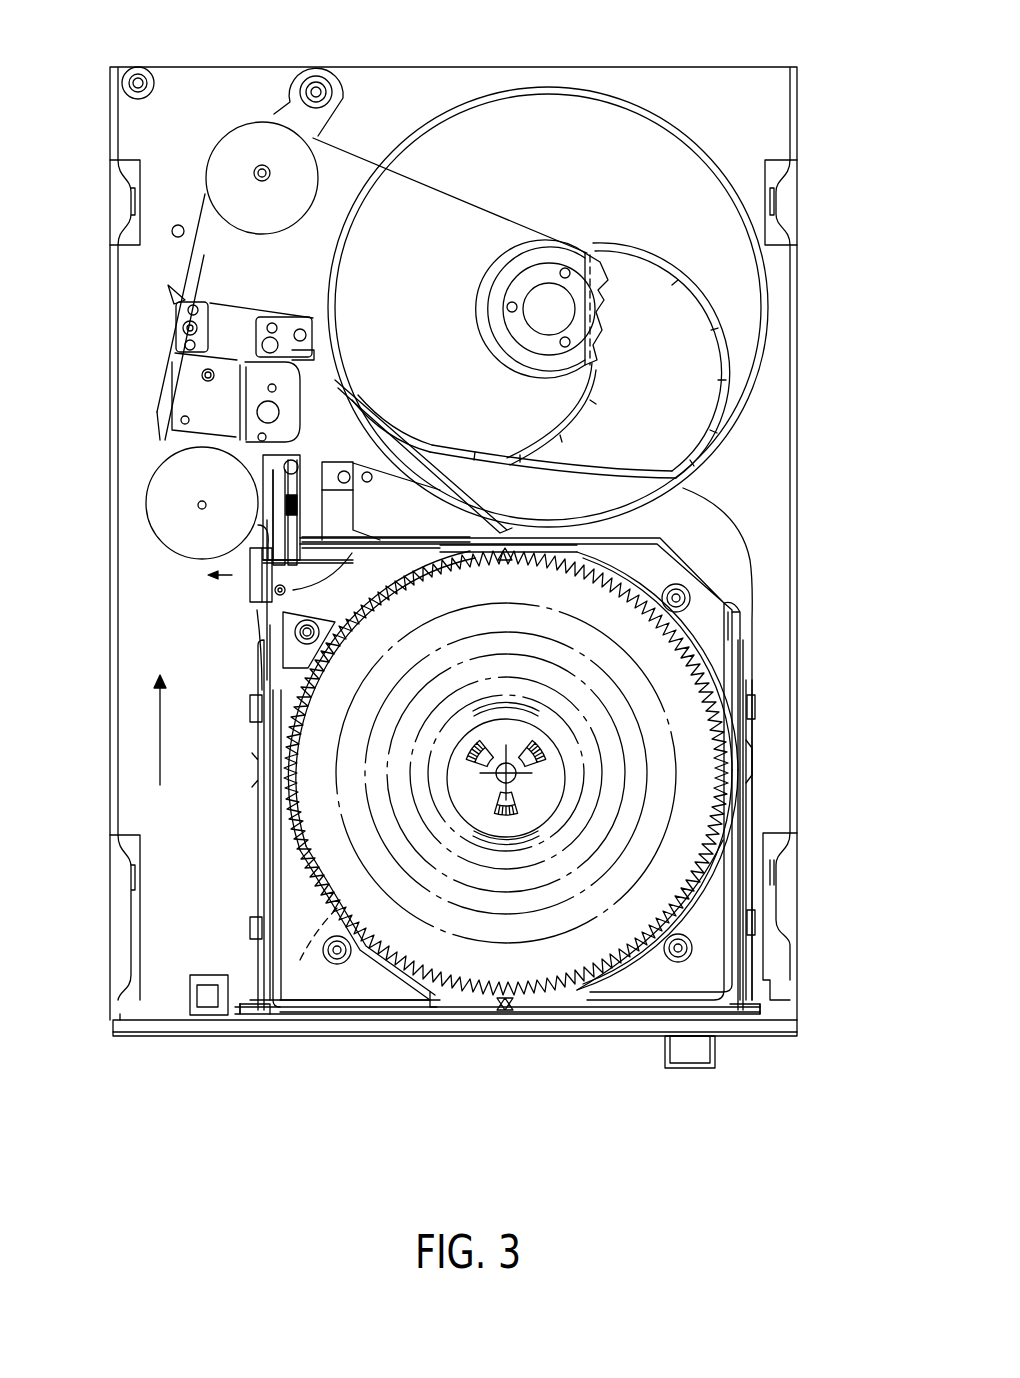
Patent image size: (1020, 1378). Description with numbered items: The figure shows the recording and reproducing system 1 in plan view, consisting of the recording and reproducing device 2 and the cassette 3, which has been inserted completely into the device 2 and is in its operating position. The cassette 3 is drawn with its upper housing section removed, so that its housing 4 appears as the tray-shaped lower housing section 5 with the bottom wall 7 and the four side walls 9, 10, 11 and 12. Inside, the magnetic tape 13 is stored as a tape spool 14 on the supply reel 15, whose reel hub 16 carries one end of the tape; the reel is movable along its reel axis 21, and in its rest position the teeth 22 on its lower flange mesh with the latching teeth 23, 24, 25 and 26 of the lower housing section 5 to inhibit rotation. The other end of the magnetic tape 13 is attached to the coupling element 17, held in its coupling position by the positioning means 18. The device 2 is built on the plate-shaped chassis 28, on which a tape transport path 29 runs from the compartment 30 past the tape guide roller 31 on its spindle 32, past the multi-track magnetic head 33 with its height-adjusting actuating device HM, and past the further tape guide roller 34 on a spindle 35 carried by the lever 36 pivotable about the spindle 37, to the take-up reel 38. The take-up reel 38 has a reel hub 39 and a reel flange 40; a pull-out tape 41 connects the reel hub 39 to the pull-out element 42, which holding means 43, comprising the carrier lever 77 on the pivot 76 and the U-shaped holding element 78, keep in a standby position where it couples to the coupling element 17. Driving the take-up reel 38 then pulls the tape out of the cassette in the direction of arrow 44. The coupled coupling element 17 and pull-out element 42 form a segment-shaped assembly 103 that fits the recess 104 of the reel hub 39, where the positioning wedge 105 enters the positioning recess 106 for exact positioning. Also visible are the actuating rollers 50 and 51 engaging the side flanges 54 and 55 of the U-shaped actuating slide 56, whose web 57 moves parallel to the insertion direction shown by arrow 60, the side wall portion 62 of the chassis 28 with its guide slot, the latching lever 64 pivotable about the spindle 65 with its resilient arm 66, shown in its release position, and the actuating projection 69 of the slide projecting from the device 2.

The recording and reproducing system 1 is at (178, 1158).
The recording and reproducing device 2 is at (155, 1052).
The cassette 3 is at (750, 535).
The housing 4 is at (668, 520).
The lower housing section 5 is at (272, 1018).
The bottom wall 7 is at (390, 1001).
The side wall 9 is at (738, 640).
The side wall 10 is at (594, 538).
The side wall 11 is at (270, 858).
The side wall 12 is at (607, 1010).
The magnetic tape 13 is at (425, 570).
The tape spool 14 is at (320, 940).
The supply reel 15 is at (620, 962).
The reel hub 16 is at (555, 798).
The coupling element 17 is at (300, 583).
The positioning means 18 is at (378, 592).
The reel axis 21 is at (498, 778).
The teeth 22 is at (705, 872).
The latching teeth 23 is at (492, 1004).
The latching teeth 24 is at (718, 790).
The latching teeth 25 is at (525, 566).
The latching teeth 26 is at (296, 742).
The chassis 28 is at (690, 58).
The tape transport path 29 is at (155, 328).
The compartment 30 is at (248, 614).
The tape guide roller 31 is at (160, 484).
The spindle 32 is at (198, 506).
The magnetic head 33 is at (178, 292).
The further tape guide roller 34 is at (215, 148).
The spindle 35 is at (268, 180).
The lever 36 is at (282, 108).
The spindle 37 is at (335, 92).
The take-up reel 38 is at (732, 165).
The reel hub 39 is at (472, 298).
The reel flange 40 is at (650, 122).
The pull-out tape 41 is at (200, 205).
The pull-out element 42 is at (262, 535).
The holding means 43 is at (308, 492).
The arrow 44 is at (237, 584).
The actuating rollers 50 is at (249, 922).
The actuating rollers 51 is at (249, 714).
The side flange 54 is at (745, 812).
The side flange 55 is at (265, 810).
The actuating slide 56 is at (765, 752).
The web 57 is at (748, 860).
The arrow 60 is at (158, 786).
The side wall portion 62 is at (256, 1005).
The latching lever 64 is at (332, 448).
The spindle 65 is at (345, 471).
The resilient arm 66 is at (470, 504).
The actuating projection 69 is at (695, 1062).
The pivot 76 is at (282, 467).
The carrier lever 77 is at (268, 510).
The holding element 78 is at (243, 598).
The assembly 103 is at (262, 635).
The recess 104 is at (595, 350).
The positioning wedge 105 is at (598, 303).
The positioning recess 106 is at (327, 532).
The actuating device HM is at (282, 289).